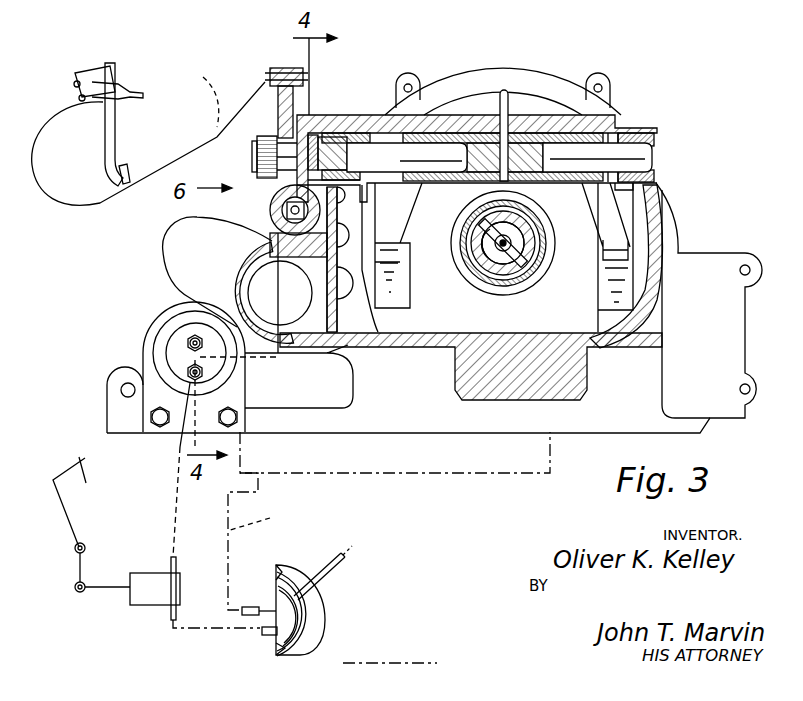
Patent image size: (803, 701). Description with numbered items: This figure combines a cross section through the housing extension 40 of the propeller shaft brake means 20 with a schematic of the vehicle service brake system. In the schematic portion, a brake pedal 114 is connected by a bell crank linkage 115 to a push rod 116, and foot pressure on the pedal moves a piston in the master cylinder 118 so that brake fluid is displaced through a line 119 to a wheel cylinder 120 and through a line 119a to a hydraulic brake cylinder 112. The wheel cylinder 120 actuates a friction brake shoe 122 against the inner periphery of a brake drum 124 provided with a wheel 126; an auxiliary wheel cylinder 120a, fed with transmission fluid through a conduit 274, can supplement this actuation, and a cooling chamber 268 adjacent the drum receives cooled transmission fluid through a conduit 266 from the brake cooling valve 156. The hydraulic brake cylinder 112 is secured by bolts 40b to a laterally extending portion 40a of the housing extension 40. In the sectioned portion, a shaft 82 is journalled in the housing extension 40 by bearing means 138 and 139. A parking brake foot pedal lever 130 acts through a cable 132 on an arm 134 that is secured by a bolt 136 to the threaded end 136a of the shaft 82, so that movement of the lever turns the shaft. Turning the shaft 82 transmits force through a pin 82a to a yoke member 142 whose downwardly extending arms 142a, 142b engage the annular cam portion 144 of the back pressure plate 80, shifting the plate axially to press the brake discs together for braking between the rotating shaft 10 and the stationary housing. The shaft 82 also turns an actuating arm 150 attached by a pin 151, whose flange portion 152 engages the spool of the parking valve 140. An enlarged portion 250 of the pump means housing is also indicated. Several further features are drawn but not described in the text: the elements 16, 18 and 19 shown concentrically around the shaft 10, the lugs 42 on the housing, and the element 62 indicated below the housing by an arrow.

The shaft 10 is at (513, 255).
The gear 16 is at (490, 225).
The hub 18 is at (482, 225).
The bearing 19 is at (535, 262).
The propeller shaft brake means 20 is at (578, 86).
The housing extension 40 is at (458, 98).
The laterally extending portion 40a is at (118, 402).
The bolts 40b is at (226, 423).
The lugs 42 is at (428, 80).
The brake unit 62 is at (352, 480).
The back pressure plate 80 is at (644, 221).
The shaft 82 is at (355, 145).
The pin 82a is at (509, 140).
The hydraulic brake cylinder 112 is at (170, 353).
The brake pedal 114 is at (120, 500).
The bell crank linkage 115 is at (78, 565).
The push rod 116 is at (108, 592).
The master cylinder 118 is at (168, 584).
The line 119 is at (172, 618).
The line 119a is at (178, 570).
The wheel cylinder 120 is at (262, 634).
The auxiliary wheel cylinder 120a is at (243, 614).
The friction brake shoe 122 is at (278, 605).
The brake drum 124 is at (305, 650).
The wheel 126 is at (310, 610).
The parking brake foot pedal lever 130 is at (110, 133).
The cable 132 is at (210, 89).
The arm 134 is at (282, 68).
The bolt 136 is at (272, 140).
The threaded end 136a is at (255, 158).
The bearing means 138 is at (341, 133).
The bearing means 139 is at (632, 133).
The parking valve 140 is at (272, 207).
The yoke member 142 is at (478, 133).
The arm 142a is at (400, 218).
The arm 142b is at (612, 213).
The cam portion 144 is at (392, 292).
The actuating arm 150 is at (420, 157).
The pin 151 is at (314, 135).
The flange portion 152 is at (280, 293).
The brake cooling valve 156 is at (255, 270).
The enlarged portion 250 is at (172, 253).
The conduit 266 is at (346, 558).
The chamber 268 is at (283, 590).
The conduit 274 is at (270, 515).